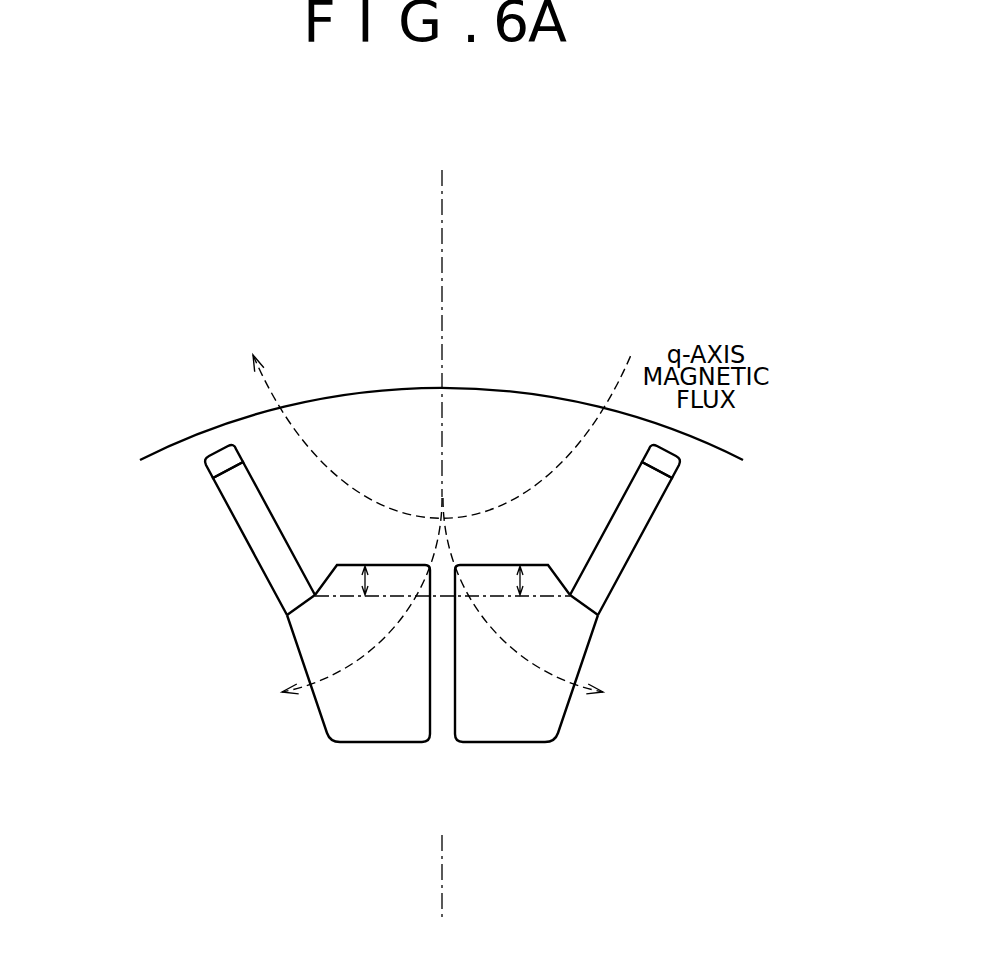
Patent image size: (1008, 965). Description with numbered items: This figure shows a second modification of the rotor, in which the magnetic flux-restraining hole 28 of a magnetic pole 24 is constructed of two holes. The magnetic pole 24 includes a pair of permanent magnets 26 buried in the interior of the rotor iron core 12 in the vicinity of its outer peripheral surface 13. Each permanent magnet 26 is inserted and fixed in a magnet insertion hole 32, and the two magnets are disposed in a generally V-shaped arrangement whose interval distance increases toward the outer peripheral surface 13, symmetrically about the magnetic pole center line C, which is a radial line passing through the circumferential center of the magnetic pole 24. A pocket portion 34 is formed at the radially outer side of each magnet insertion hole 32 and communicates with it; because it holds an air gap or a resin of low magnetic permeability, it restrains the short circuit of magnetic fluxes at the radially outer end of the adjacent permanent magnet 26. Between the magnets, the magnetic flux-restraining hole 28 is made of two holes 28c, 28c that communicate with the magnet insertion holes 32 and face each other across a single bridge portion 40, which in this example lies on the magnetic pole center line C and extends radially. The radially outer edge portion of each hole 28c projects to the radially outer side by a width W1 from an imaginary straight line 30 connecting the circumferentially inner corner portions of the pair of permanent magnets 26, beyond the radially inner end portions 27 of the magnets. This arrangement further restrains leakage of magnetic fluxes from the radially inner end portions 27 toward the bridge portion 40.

The rotor iron core 12 is at (441, 379).
The outer peripheral surface 13 is at (410, 388).
The magnetic pole 24 is at (558, 415).
The magnetic pole center line C is at (442, 231).
The magnet insertion hole 32 is at (242, 529).
The pocket portion 34 is at (220, 458).
The permanent magnet 26 is at (268, 545).
The radially inner end portion 27 is at (300, 604).
The magnetic flux-restraining hole 28 is at (442, 672).
The hole 28c is at (442, 626).
The imaginary straight line 30 is at (467, 597).
The bridge portion 40 is at (442, 683).
The width W1 is at (370, 568).